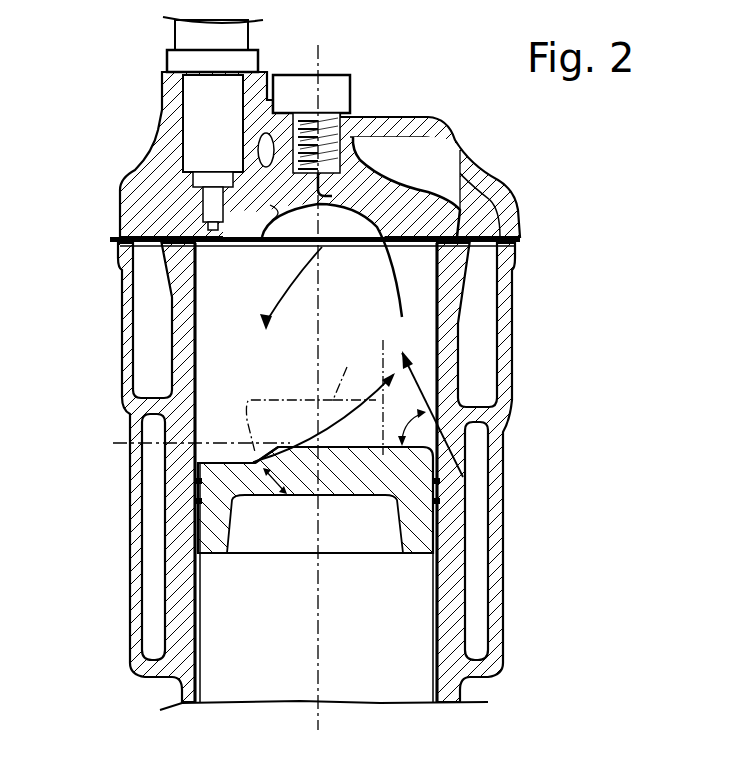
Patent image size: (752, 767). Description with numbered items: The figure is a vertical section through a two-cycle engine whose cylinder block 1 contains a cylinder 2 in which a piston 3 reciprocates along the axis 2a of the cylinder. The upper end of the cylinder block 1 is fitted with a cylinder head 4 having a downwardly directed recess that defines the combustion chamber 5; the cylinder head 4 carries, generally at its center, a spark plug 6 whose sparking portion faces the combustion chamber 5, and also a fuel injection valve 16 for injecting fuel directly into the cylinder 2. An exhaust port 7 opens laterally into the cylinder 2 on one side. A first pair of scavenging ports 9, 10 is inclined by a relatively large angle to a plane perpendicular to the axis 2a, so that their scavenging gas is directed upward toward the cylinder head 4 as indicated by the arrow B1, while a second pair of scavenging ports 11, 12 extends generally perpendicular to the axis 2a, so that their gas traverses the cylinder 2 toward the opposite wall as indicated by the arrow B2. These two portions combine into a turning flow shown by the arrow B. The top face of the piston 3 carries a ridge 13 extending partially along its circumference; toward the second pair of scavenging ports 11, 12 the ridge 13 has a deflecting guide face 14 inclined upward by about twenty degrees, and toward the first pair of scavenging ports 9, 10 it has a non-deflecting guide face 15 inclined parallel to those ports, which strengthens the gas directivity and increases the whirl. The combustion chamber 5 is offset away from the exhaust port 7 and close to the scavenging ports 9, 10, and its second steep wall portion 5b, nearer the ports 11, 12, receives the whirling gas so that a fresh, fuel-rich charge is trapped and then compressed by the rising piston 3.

The cylinder block 1 is at (324, 475).
The cylinder 2 is at (251, 472).
The axis of the cylinder 2a is at (317, 283).
The piston 3 is at (381, 571).
The cylinder head 4 is at (299, 173).
The combustion chamber 5 is at (385, 213).
The second steep wall portion 5b is at (277, 208).
The spark plug 6 is at (340, 130).
The exhaust port 7 is at (314, 397).
The scavenging port 9 is at (470, 480).
The scavenging port 10 is at (525, 450).
The scavenging port 11 is at (177, 452).
The scavenging port 12 is at (116, 450).
The ridge 13 is at (427, 436).
The deflecting guide face 14 is at (340, 460).
The non-deflecting guide face 15 is at (447, 482).
The fuel injection valve 16 is at (207, 104).
The turning flow B is at (393, 282).
The scavenging gas portion B1 is at (393, 433).
The scavenging gas portion B2 is at (333, 440).